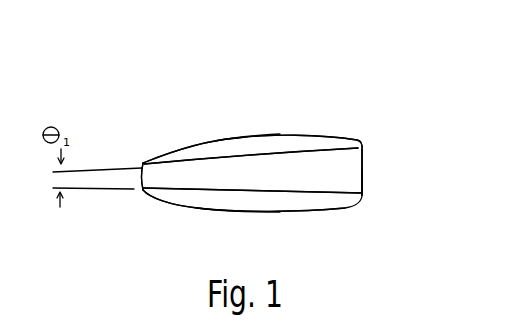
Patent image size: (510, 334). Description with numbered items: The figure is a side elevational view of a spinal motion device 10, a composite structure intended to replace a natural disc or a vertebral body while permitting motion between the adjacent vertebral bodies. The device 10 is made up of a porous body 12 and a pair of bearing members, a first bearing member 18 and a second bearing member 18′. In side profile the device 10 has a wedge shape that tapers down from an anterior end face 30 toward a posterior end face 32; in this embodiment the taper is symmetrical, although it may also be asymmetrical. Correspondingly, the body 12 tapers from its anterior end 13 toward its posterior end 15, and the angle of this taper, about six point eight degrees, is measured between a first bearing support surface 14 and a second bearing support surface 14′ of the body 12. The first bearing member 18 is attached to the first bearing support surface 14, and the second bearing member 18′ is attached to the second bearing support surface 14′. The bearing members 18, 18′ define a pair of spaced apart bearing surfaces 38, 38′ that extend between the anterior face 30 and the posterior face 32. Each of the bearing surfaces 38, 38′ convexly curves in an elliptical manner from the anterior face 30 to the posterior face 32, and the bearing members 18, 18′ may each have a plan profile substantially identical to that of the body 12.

The spinal motion device 10 is at (236, 104).
The porous body 12 is at (337, 157).
The anterior end 13 is at (367, 158).
The first bearing support surface 14 is at (252, 155).
The second bearing support surface 14′ is at (295, 193).
The posterior end 15 is at (136, 188).
The first bearing member 18 is at (305, 136).
The second bearing member 18′ is at (210, 207).
The anterior end face 30 is at (363, 183).
The posterior end face 32 is at (142, 170).
The first bearing surface 38 is at (238, 138).
The second bearing surface 38′ is at (238, 212).